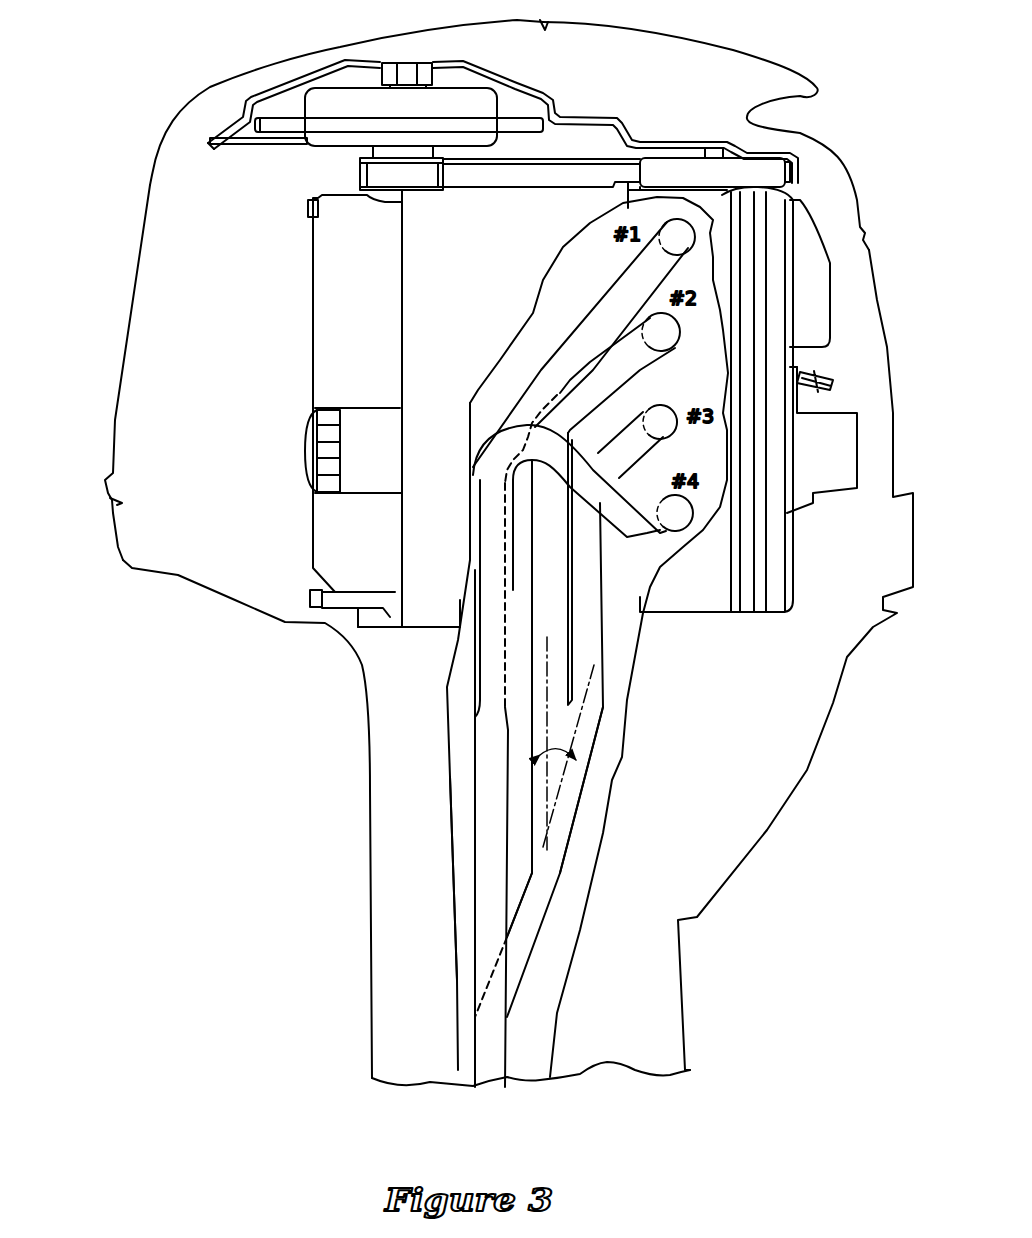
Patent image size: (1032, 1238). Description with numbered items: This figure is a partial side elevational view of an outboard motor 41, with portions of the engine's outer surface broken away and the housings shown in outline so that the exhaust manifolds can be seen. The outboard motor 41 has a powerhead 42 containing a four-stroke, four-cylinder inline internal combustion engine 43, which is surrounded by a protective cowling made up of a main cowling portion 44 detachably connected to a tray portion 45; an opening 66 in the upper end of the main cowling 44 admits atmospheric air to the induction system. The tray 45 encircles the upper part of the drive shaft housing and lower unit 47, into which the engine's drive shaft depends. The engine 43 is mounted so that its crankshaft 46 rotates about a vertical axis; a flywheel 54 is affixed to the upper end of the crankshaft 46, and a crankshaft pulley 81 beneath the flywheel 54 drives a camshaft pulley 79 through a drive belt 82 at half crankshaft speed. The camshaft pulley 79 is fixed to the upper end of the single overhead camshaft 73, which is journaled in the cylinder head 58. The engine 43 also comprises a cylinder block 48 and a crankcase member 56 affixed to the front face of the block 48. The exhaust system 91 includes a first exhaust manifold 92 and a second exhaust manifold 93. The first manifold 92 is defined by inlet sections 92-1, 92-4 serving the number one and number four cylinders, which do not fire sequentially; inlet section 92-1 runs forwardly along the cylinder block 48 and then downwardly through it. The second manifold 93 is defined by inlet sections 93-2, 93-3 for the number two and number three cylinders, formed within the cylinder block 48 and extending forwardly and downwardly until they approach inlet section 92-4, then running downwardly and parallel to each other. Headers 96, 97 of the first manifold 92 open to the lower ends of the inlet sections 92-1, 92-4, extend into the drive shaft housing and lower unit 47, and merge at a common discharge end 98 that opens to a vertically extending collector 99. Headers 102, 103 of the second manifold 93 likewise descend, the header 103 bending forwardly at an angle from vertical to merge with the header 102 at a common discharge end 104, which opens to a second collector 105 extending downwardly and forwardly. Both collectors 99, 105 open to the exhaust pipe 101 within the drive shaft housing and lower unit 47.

The outboard motor 41 is at (858, 104).
The powerhead 42 is at (126, 212).
The internal combustion engine 43 is at (293, 262).
The main cowling portion 44 is at (893, 430).
The tray portion 45 is at (177, 590).
The crankshaft 46 is at (375, 153).
The drive shaft housing and lower unit 47 is at (370, 805).
The cylinder block 48 is at (430, 628).
The flywheel 54 is at (503, 97).
The crankcase member 56 is at (315, 368).
The cylinder head 58 is at (730, 623).
The opening 66 is at (810, 117).
The camshaft 73 is at (743, 200).
The camshaft pulley 79 is at (678, 158).
The crankshaft pulley 81 is at (423, 187).
The drive belt 82 is at (553, 180).
The exhaust system 91 is at (496, 396).
The first exhaust manifold 92 is at (469, 518).
The inlet section 92-1 is at (597, 300).
The inlet section 92-4 is at (670, 572).
The second exhaust manifold 93 is at (607, 652).
The inlet section 93-2 is at (617, 393).
The inlet section 93-3 is at (620, 577).
The exhaust header 96 is at (473, 682).
The exhaust header 97 is at (488, 728).
The common discharge end 98 is at (470, 768).
The collector 99 is at (473, 867).
The exhaust pipe 101 is at (507, 1047).
The exhaust header 102 is at (567, 670).
The exhaust header 103 is at (622, 620).
The common discharge end 104 is at (617, 830).
The collector 105 is at (538, 968).